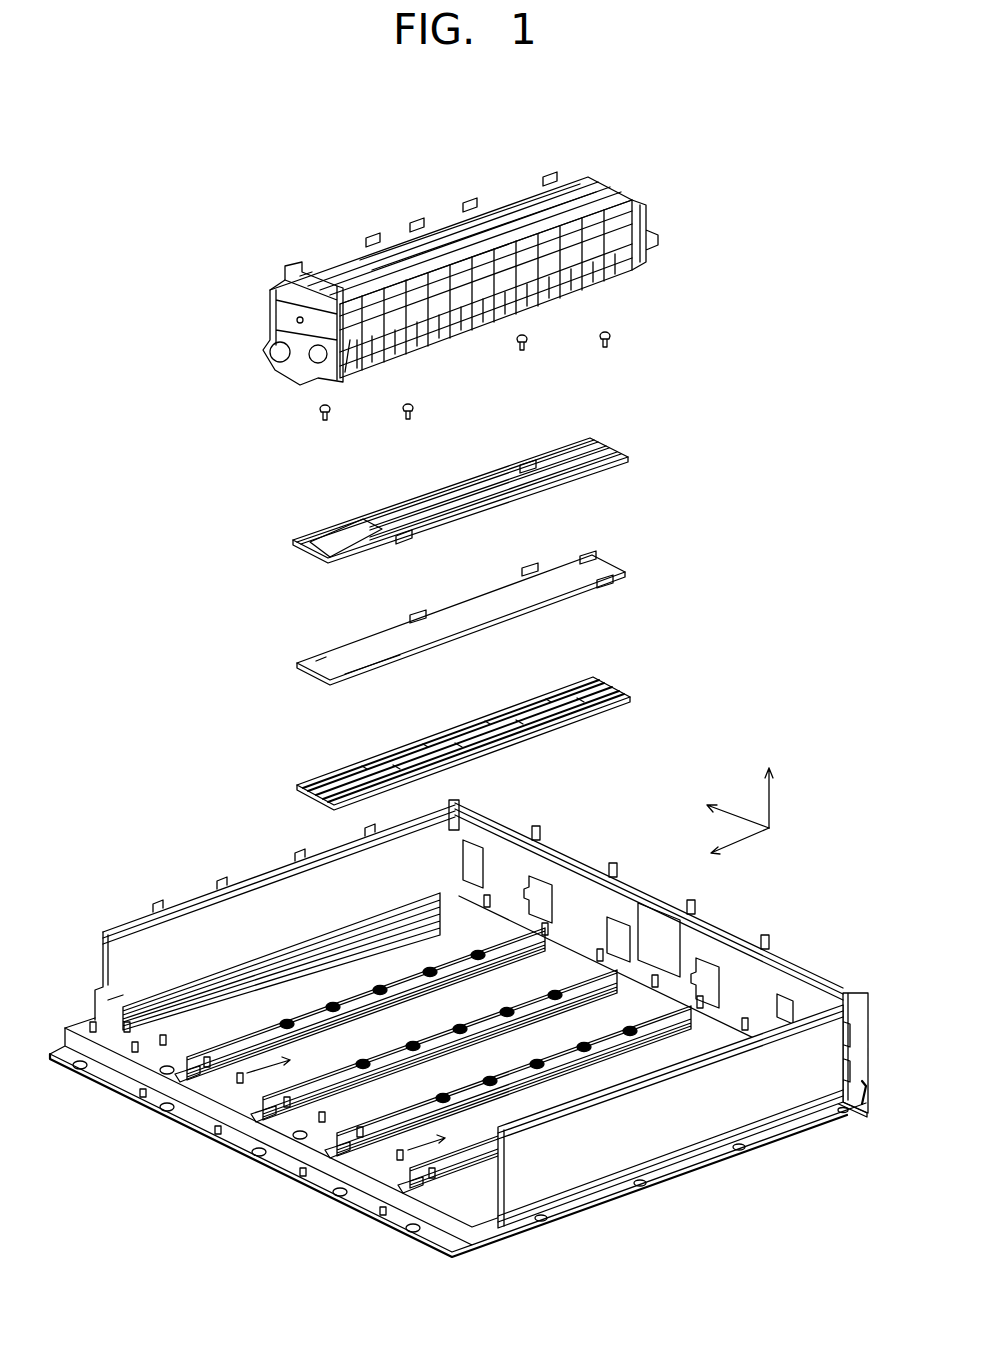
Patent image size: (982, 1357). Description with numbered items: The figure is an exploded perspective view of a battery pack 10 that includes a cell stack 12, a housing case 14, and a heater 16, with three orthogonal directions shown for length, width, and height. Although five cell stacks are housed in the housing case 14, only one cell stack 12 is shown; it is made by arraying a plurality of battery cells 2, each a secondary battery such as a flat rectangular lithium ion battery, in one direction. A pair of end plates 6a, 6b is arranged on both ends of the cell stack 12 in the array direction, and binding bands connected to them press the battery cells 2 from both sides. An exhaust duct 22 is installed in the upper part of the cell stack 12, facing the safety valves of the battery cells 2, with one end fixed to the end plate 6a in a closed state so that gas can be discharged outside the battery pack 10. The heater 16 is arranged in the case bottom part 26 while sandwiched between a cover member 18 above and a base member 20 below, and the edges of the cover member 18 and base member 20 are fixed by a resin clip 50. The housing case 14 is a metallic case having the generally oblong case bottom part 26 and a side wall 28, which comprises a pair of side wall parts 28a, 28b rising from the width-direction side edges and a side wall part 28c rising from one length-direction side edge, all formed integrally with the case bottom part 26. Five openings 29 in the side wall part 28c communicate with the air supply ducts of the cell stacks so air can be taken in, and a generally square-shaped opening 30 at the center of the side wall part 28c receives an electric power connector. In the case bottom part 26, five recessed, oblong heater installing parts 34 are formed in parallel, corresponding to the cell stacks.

The battery pack 10 is at (747, 223).
The cell stack 12 is at (590, 162).
The battery cell 2 is at (593, 290).
The end plate 6a is at (270, 317).
The end plate 6b is at (640, 233).
The exhaust duct 22 is at (517, 217).
The resin clip 50 is at (613, 347).
The cover member 18 is at (610, 440).
The heater 16 is at (613, 558).
The base member 20 is at (613, 675).
The housing case 14 is at (599, 853).
The case bottom part 26 is at (574, 1210).
The side wall 28 is at (516, 824).
The side wall part 28a is at (263, 907).
The side wall part 28b is at (715, 1111).
The side wall part 28c is at (799, 969).
The opening 29 is at (541, 884).
The opening 30 is at (669, 927).
The heater installing part 34 is at (244, 1081).